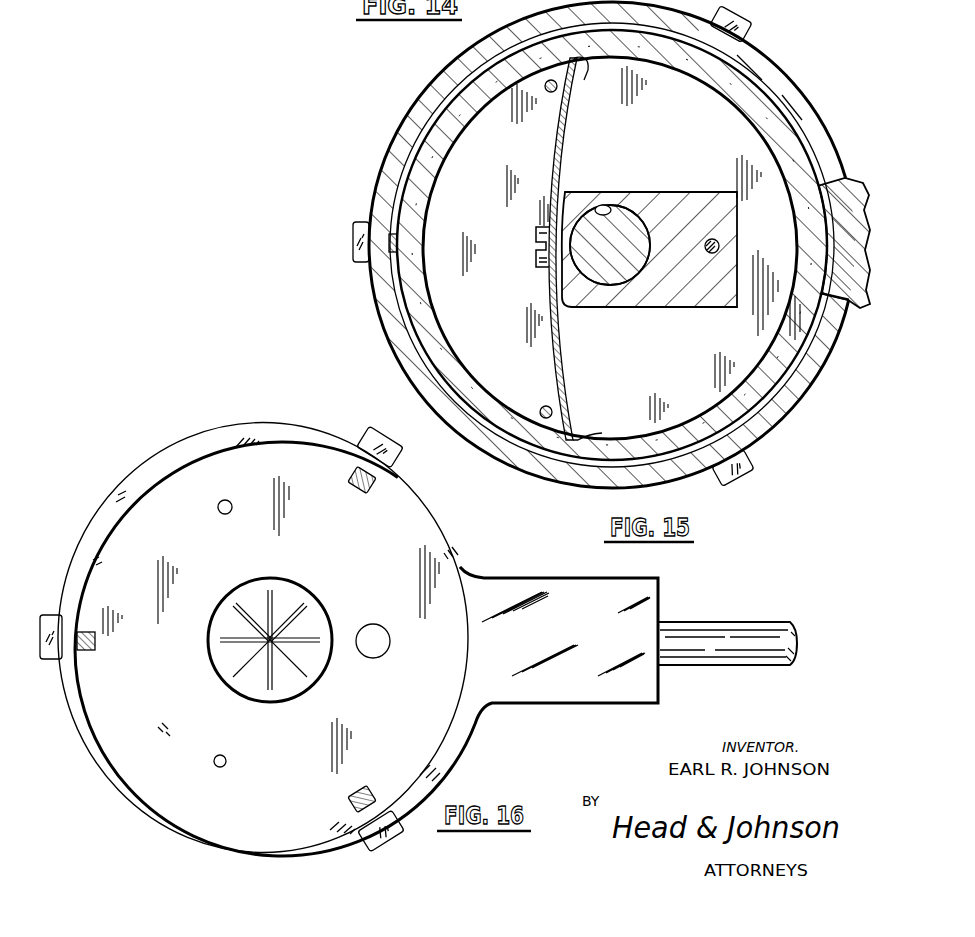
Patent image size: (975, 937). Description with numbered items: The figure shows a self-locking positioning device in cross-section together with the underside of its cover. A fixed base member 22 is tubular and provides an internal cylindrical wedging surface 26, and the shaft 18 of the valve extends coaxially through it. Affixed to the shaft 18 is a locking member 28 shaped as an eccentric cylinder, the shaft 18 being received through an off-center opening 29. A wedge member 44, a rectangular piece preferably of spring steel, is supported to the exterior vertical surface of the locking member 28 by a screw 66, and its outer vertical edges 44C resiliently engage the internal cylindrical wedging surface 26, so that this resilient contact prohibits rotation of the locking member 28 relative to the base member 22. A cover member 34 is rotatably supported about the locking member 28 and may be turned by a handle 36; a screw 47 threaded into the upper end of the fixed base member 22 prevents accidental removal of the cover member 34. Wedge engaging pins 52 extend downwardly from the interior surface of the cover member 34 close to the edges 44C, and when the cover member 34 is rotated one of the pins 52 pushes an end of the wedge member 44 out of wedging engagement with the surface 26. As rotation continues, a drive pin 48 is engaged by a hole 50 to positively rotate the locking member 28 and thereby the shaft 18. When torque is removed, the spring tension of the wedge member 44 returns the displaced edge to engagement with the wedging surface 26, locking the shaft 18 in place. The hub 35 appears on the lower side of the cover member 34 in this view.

In FIG. 15, the shaft 18 is at (618, 222).
In FIG. 15, the fixed base member 22 is at (517, 437).
In FIG. 15, the internal cylindrical wedging surface 26 is at (721, 90).
In FIG. 15, the locking member 28 is at (697, 302).
In FIG. 15, the off-center opening 29 is at (606, 205).
In FIG. 16, the cover member 34 is at (462, 550).
In FIG. 16, the hub 35 is at (220, 660).
In FIG. 16, the handle 36 is at (700, 630).
In FIG. 15, the wedge member 44 is at (556, 392).
In FIG. 15, the outer edges of wedge member 44C is at (585, 80).
In FIG. 15, the screw 47 is at (352, 257).
In FIG. 16, the screw 47 is at (381, 440).
In FIG. 15, the drive pin 48 is at (722, 249).
In FIG. 16, the hole 50 is at (382, 650).
In FIG. 15, the wedge engaging pins 52 is at (550, 93).
In FIG. 16, the wedge engaging pins 52 is at (219, 512).
In FIG. 15, the screw 66 is at (535, 259).